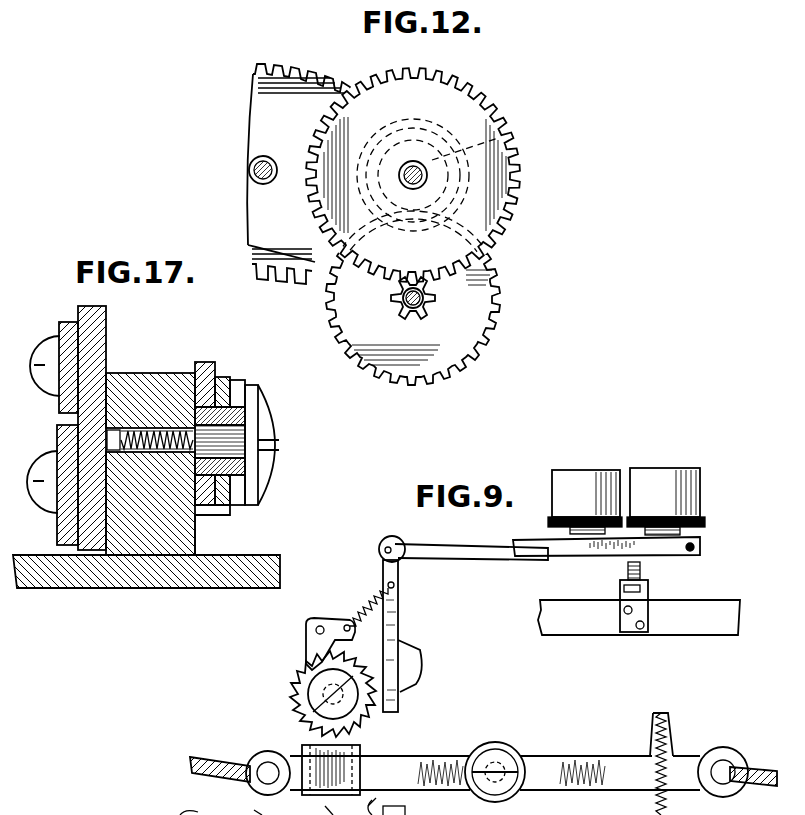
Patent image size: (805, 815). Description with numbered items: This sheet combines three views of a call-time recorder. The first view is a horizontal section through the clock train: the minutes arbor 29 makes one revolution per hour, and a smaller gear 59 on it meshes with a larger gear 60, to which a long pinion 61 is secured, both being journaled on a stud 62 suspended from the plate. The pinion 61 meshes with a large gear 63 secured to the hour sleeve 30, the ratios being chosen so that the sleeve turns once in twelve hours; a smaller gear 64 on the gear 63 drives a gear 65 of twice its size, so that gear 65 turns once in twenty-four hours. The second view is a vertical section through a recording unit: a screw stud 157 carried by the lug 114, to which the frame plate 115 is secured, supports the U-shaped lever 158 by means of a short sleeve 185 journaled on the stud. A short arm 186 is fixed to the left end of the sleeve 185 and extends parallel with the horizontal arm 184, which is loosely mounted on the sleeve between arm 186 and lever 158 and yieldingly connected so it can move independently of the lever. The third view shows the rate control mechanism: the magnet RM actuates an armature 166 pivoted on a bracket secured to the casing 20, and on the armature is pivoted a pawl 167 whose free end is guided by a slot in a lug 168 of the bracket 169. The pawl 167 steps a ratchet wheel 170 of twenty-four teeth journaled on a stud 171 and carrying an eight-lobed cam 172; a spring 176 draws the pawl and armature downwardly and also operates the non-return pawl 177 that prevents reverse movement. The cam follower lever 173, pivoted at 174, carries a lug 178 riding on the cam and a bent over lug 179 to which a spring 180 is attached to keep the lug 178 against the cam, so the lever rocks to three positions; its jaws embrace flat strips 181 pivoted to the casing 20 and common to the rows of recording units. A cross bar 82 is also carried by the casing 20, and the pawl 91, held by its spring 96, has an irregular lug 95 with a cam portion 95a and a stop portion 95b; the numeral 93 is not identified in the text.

In FIG. 12, the minutes arbor 29 is at (412, 168).
In FIG. 12, the hour sleeve 30 is at (421, 170).
In FIG. 12, the smaller gear 59 is at (426, 152).
In FIG. 12, the larger gear 60 is at (465, 328).
In FIG. 12, the long pinion 61 is at (437, 300).
In FIG. 12, the stud 62 is at (401, 303).
In FIG. 12, the large gear 63 is at (493, 200).
In FIG. 12, the smaller gear 64 is at (503, 134).
In FIG. 12, the gear 65 is at (258, 244).
In FIG. 17, the frame plate 115 is at (92, 309).
In FIG. 17, the lug 114 is at (165, 364).
In FIG. 17, the U-shaped lever 158 is at (212, 367).
In FIG. 17, the short arm 186 is at (242, 385).
In FIG. 17, the screw stud 157 is at (266, 432).
In FIG. 17, the short sleeve 185 is at (248, 456).
In FIG. 17, the horizontal arm 184 is at (222, 515).
In FIG. 17, the casing 20 is at (165, 589).
In FIG. 9, the magnet RM is at (700, 501).
In FIG. 9, the armature 166 is at (574, 547).
In FIG. 9, the cross bar 82 is at (693, 617).
In FIG. 9, the pawl 167 is at (399, 613).
In FIG. 9, the lug 168 is at (420, 657).
In FIG. 9, the spring 176 is at (357, 617).
In FIG. 9, the non-return pawl 177 is at (306, 643).
In FIG. 9, the ratchet wheel 170 is at (292, 694).
In FIG. 9, the stud 171 is at (322, 683).
In FIG. 9, the multi-lobed cam 172 is at (309, 711).
In FIG. 9, the lug 178 is at (316, 753).
In FIG. 9, the bracket 169 is at (364, 753).
In FIG. 9, the cam follower lever 173 is at (588, 766).
In FIG. 9, the pivot 174 is at (497, 753).
In FIG. 9, the bent over lug 179 is at (668, 715).
In FIG. 9, the spring 180 is at (665, 771).
In FIG. 9, the flat strip 181 is at (223, 771).
In FIG. 9, the pawl 91 is at (211, 807).
In FIG. 9, the spring 96 is at (269, 808).
In FIG. 9, the member 93 is at (316, 808).
In FIG. 9, the irregular lug 95 is at (355, 807).
In FIG. 9, the cam portion 95a is at (406, 810).
In FIG. 9, the stop portion 95b is at (372, 800).